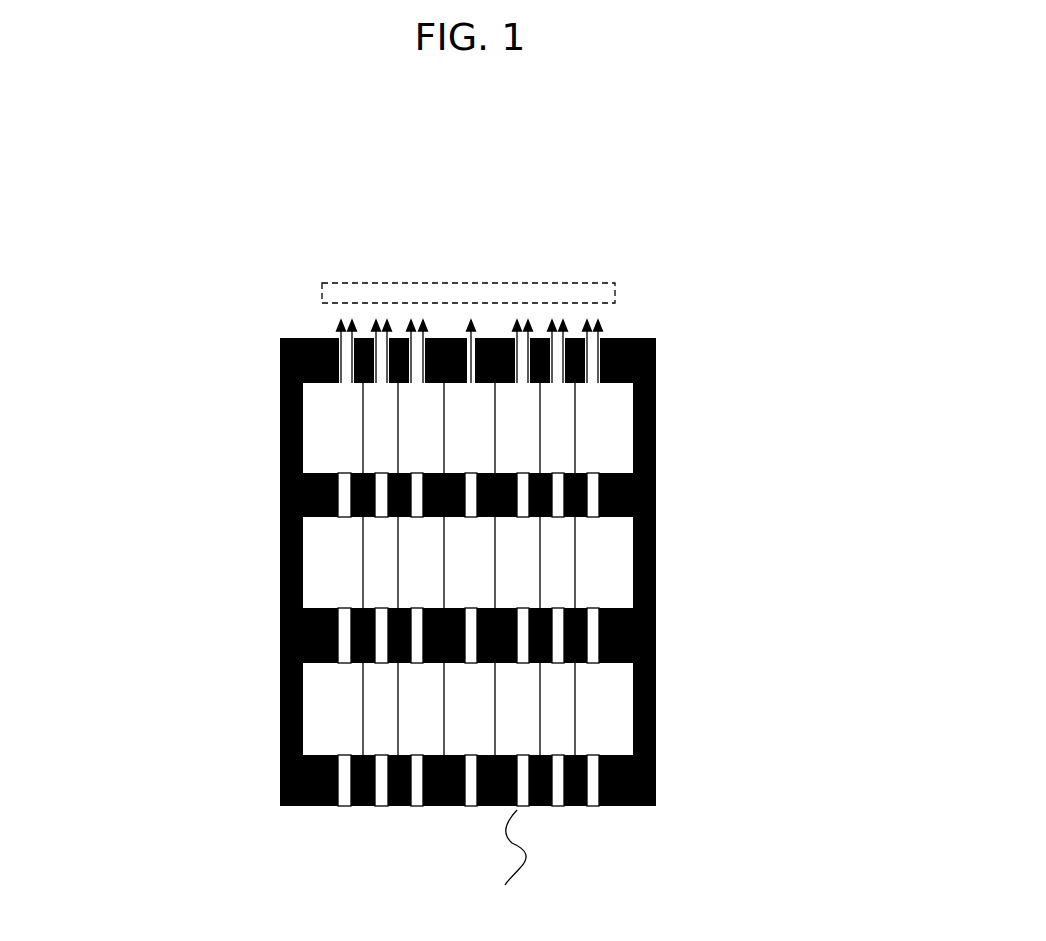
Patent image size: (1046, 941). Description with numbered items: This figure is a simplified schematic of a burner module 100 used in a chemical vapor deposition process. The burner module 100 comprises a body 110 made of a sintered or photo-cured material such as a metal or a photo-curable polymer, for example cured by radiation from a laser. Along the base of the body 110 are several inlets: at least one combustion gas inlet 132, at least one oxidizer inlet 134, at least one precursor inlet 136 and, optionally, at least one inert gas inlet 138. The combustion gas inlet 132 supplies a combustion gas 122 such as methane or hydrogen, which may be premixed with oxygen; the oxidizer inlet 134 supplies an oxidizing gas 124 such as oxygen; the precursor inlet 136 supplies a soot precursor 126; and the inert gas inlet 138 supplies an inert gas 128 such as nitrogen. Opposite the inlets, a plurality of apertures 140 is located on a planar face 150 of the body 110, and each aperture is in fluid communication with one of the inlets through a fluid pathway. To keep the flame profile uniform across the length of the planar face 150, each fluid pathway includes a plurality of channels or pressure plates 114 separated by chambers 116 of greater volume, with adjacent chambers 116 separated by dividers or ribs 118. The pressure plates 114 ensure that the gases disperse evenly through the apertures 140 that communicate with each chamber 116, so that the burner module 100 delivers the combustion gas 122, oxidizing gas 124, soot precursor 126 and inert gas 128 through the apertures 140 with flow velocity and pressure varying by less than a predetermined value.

The burner module 100 is at (493, 123).
The body 110 is at (292, 428).
The pressure plates 114 is at (327, 648).
The chambers 116 is at (550, 447).
The dividers or ribs 118 is at (363, 697).
The combustion gas 122 is at (377, 313).
The oxidizing gas 124 is at (412, 313).
The soot precursor 126 is at (472, 313).
The inert gas 128 is at (338, 313).
The combustion gas inlet 132 is at (373, 805).
The oxidizer inlet 134 is at (417, 805).
The precursor inlet 136 is at (470, 805).
The inert gas inlet 138 is at (337, 805).
The apertures 140 is at (463, 373).
The planar face 150 is at (470, 281).